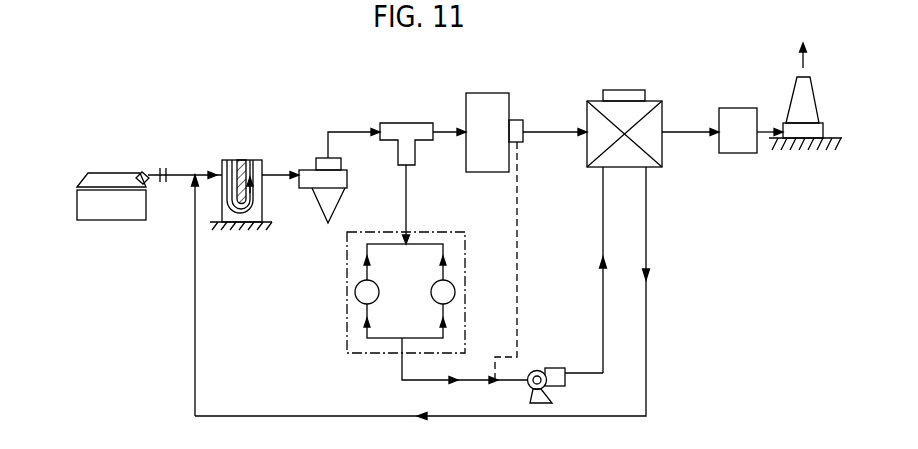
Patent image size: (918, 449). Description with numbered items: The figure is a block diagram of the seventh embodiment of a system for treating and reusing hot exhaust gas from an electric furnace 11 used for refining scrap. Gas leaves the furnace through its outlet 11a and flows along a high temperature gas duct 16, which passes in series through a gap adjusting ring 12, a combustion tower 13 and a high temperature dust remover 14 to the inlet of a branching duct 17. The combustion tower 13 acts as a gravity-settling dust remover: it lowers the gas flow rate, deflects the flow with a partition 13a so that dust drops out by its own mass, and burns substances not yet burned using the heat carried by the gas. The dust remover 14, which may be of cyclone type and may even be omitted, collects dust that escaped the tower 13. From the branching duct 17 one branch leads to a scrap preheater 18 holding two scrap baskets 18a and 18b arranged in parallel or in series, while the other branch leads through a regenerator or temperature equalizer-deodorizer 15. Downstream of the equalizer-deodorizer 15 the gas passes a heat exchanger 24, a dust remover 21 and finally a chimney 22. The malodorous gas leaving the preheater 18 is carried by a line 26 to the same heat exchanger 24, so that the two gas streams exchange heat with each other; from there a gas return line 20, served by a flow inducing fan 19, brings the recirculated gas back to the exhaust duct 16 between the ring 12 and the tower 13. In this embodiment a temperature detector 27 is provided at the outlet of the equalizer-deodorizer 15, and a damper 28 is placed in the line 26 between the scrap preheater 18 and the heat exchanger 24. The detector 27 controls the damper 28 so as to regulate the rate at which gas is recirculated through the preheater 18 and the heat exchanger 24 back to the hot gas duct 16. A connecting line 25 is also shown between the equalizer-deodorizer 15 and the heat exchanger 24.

The electric furnace 11 is at (118, 218).
The outlet 11a is at (143, 174).
The gap adjusting ring 12 is at (170, 183).
The combustion tower 13 is at (257, 160).
The partition 13a is at (249, 203).
The high temperature dust remover 14 is at (327, 227).
The equalizer-deodorizer 15 is at (497, 143).
The high temperature gas duct 16 is at (195, 172).
The branching duct 17 is at (410, 125).
The scrap preheater 18 is at (465, 240).
The scrap basket 18a is at (375, 296).
The scrap basket 18b is at (452, 292).
The flow inducing fan 19 is at (560, 368).
The gas return line 20 is at (647, 298).
The dust remover 21 is at (748, 145).
The chimney 22 is at (806, 100).
The heat exchanger 24 is at (652, 100).
The conduit 25 is at (563, 130).
The line 26 is at (603, 294).
The temperature detector 27 is at (517, 120).
The damper 28 is at (495, 380).